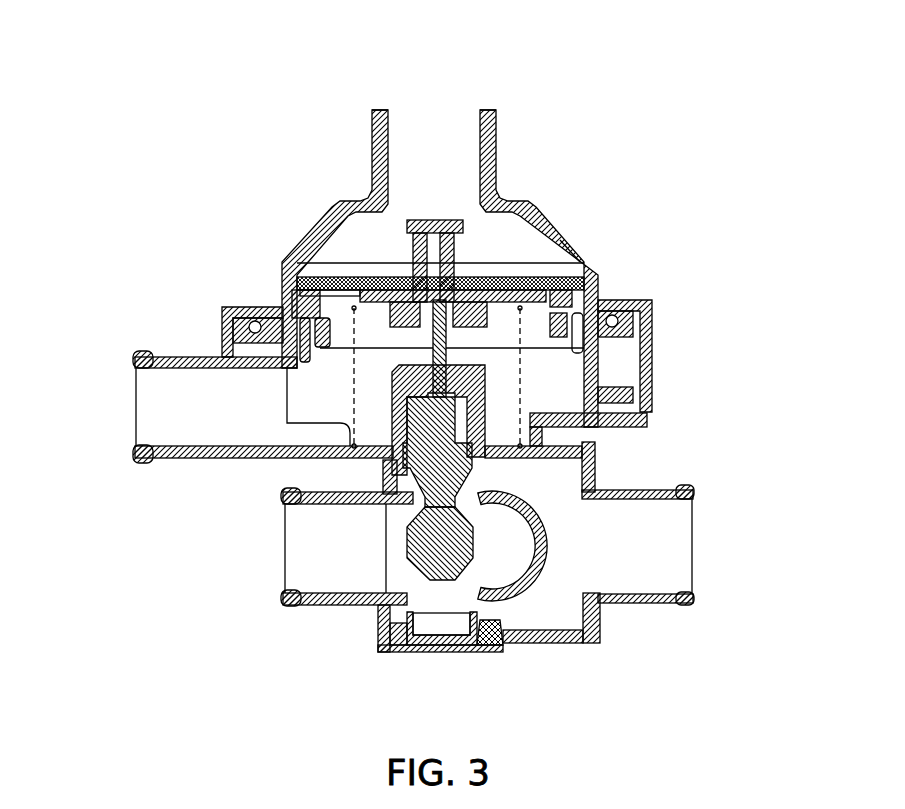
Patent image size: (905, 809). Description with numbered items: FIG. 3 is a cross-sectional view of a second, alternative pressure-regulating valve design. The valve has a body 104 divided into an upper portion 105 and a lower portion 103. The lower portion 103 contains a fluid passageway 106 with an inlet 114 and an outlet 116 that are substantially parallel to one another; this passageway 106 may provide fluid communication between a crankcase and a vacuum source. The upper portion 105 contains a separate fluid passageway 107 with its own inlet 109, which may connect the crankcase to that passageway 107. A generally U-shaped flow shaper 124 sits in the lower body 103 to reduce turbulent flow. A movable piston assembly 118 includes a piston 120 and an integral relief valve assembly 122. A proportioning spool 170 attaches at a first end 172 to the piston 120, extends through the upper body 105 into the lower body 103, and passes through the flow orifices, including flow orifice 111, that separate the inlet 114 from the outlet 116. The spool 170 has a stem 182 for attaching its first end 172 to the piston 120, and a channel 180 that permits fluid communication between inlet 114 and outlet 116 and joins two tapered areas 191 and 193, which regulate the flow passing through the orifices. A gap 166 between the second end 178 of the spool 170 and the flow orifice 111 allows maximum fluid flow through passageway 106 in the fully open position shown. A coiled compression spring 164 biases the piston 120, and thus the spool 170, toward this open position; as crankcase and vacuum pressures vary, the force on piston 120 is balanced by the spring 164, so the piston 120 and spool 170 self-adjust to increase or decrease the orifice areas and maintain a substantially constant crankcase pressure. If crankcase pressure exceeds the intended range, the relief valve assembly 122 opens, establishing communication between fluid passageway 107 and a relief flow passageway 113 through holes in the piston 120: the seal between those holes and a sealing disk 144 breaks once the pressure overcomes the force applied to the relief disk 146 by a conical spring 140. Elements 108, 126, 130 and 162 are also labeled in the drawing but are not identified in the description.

The lower portion 103 is at (380, 650).
The body 104 is at (190, 463).
The upper portion 105 is at (133, 357).
The fluid passageway 106 is at (545, 610).
The fluid passageway 107 is at (263, 388).
The diaphragm 108 is at (297, 262).
The inlet 109 is at (170, 425).
The flow orifice 111 is at (482, 616).
The relief flow passageway 113 is at (422, 135).
The inlet 114 is at (463, 490).
The outlet 116 is at (305, 584).
The piston assembly 118 is at (416, 205).
The piston 120 is at (597, 288).
The relief valve assembly 122 is at (350, 250).
The flow shaper 124 is at (550, 535).
The cover chamber 126 is at (403, 248).
The stem cap 130 is at (434, 218).
The conical spring 140 is at (541, 214).
The sealing disk 144 is at (580, 244).
The relief disk 146 is at (312, 262).
The clamp block 162 is at (332, 272).
The coiled compression spring 164 is at (640, 300).
The gap 166 is at (425, 602).
The proportioning spool 170 is at (478, 527).
The first end 172 is at (443, 340).
The second end 178 is at (410, 548).
The channel 180 is at (412, 513).
The stem 182 is at (447, 652).
The tapered area 191 is at (388, 481).
The tapered area 193 is at (372, 600).